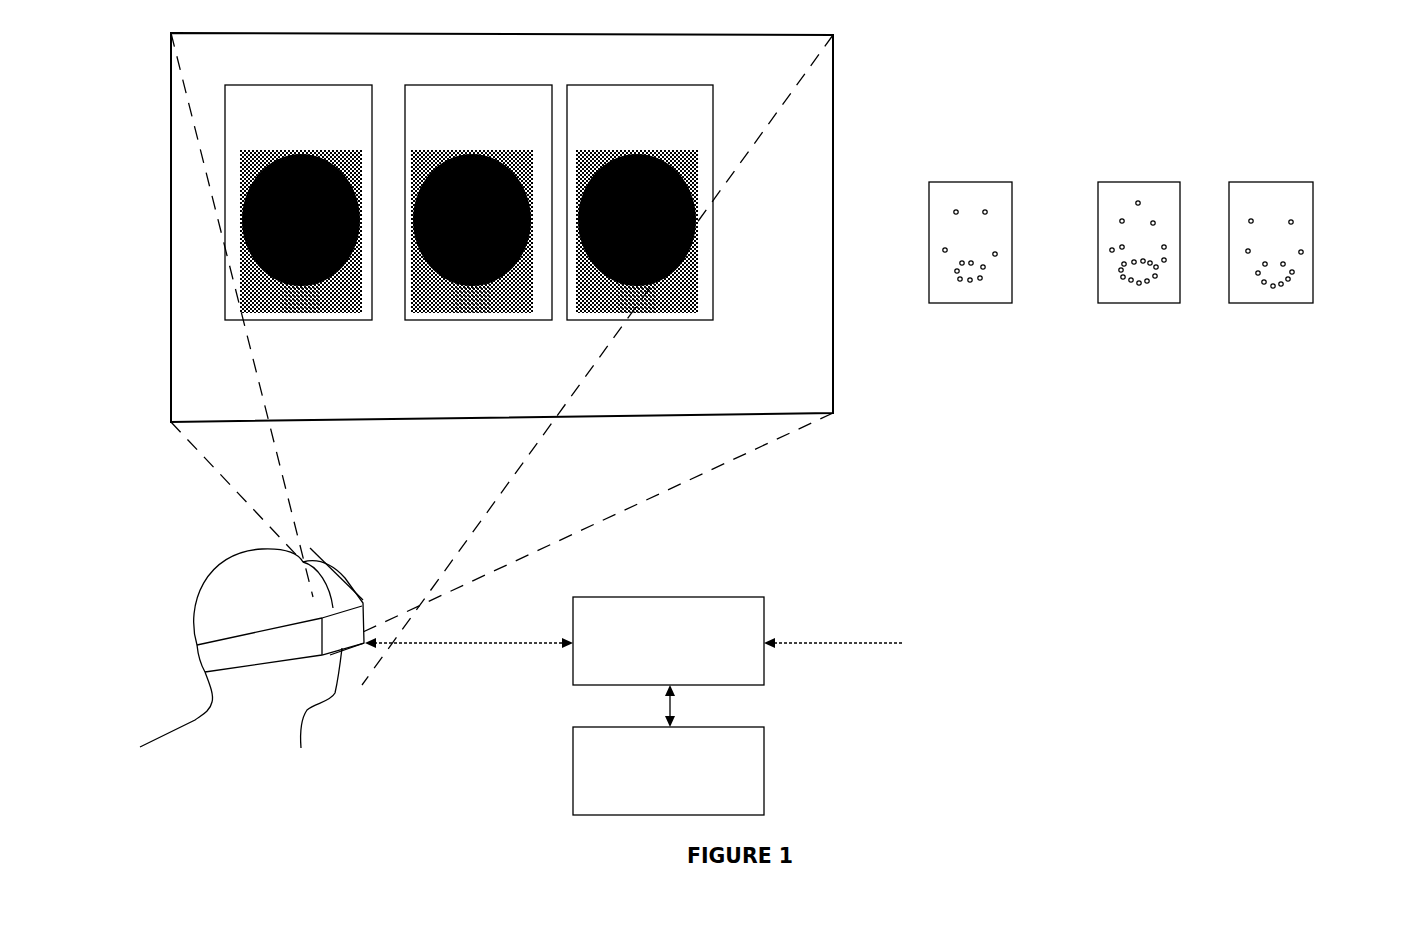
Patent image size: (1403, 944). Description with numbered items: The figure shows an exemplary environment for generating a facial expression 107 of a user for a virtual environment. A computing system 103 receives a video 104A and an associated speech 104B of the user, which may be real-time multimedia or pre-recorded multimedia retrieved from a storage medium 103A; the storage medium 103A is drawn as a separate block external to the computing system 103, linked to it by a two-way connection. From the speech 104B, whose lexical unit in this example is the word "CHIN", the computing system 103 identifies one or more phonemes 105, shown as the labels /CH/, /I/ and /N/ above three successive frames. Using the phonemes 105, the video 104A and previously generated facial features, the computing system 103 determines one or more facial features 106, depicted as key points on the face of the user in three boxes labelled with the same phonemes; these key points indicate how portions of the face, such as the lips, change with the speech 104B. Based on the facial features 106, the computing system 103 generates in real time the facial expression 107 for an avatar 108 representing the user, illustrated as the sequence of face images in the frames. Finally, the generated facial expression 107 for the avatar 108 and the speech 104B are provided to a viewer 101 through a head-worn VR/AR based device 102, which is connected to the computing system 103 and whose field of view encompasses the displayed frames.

The viewer 101 is at (230, 558).
The VR/AR based device 102 is at (343, 580).
The computing system 103 is at (668, 641).
The storage medium 103A is at (668, 771).
The video 104A is at (911, 634).
The associated speech 104B is at (1001, 653).
The phonemes 105 is at (653, 102).
The facial features 106 is at (1110, 248).
The facial expression 107 is at (592, 283).
The avatar 108 is at (510, 152).